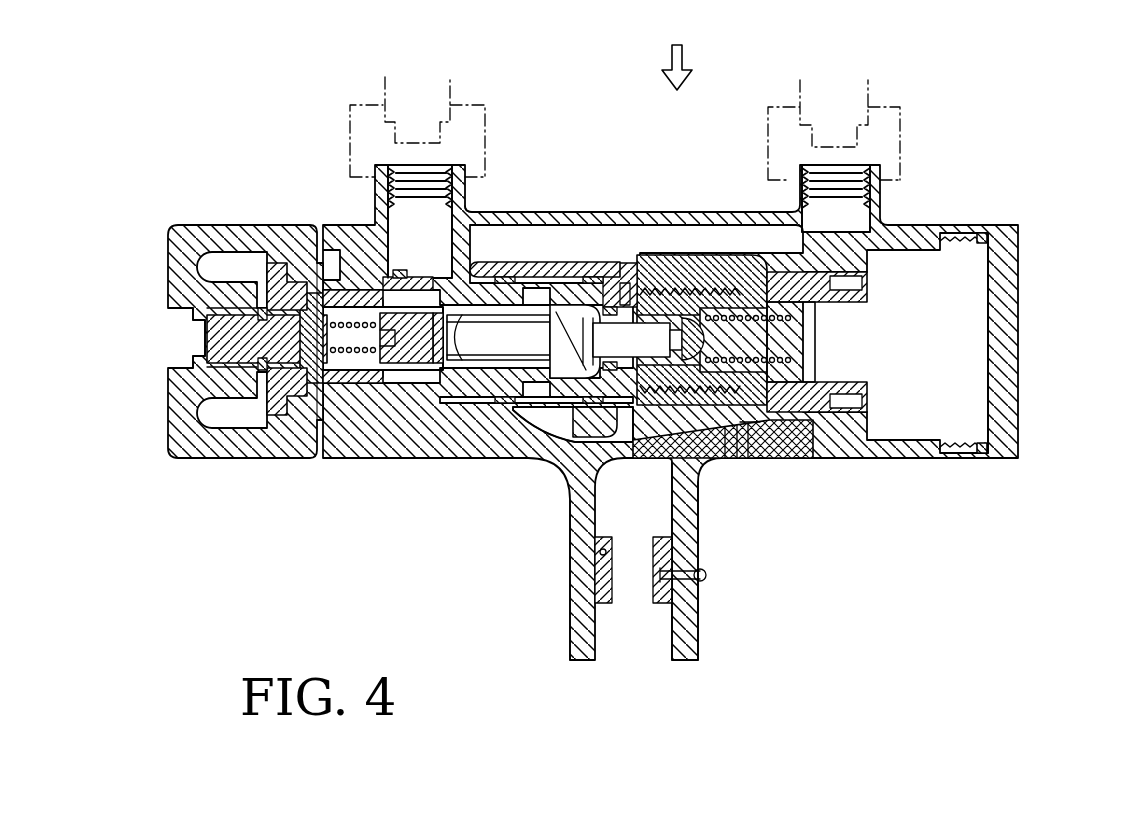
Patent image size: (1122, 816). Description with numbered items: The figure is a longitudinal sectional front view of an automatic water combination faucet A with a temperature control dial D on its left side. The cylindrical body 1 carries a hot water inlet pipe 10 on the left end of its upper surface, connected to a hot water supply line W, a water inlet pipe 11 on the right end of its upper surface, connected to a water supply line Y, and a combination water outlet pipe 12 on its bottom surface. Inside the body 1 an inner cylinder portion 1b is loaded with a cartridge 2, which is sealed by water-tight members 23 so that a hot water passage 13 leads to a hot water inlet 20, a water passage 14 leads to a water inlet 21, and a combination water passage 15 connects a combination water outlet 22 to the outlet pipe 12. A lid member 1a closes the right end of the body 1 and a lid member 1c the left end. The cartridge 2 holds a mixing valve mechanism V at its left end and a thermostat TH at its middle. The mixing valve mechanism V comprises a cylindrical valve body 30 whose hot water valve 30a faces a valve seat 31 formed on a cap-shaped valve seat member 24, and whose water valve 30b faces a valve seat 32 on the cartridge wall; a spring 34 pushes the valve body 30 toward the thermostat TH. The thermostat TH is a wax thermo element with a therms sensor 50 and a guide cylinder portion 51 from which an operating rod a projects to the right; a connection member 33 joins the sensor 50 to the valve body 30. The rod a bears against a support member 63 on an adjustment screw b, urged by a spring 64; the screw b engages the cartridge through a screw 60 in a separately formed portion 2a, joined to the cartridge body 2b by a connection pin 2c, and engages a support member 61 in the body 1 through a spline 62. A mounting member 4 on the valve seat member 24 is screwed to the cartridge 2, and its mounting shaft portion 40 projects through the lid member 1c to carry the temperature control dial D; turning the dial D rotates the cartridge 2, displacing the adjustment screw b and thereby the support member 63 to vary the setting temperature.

The body 1 is at (668, 401).
The lid member 1a is at (1020, 368).
The inner cylinder portion 1b is at (660, 227).
The lid member 1c is at (285, 300).
The cartridge 2 is at (759, 536).
The portion 2a is at (748, 460).
The cartridge body 2b is at (725, 460).
The connection pin 2c is at (737, 460).
The mounting member 4 is at (265, 462).
The hot water inlet pipe 10 is at (458, 210).
The water inlet pipe 11 is at (878, 222).
The combination water outlet pipe 12 is at (700, 545).
The hot water passage 13 is at (380, 228).
The water passage 14 is at (574, 226).
The combination water passage 15 is at (552, 472).
The hot water inlet 20 is at (335, 295).
The water inlet 21 is at (470, 262).
The combination water outlet 22 is at (617, 462).
The water-tight members 23 is at (400, 270).
The valve seat member 24 is at (330, 318).
The valve body 30 is at (385, 449).
The hot water valve 30a is at (326, 462).
The water valve 30b is at (450, 462).
The valve seat 31 is at (313, 462).
The valve seat 32 is at (400, 462).
The connection member 33 is at (285, 462).
The spring 34 is at (235, 462).
The mounting shaft portion 40 is at (205, 316).
The therms sensor 50 is at (517, 462).
The guide cylinder portion 51 is at (750, 460).
The screw 60 is at (727, 258).
The support member 61 is at (860, 290).
The spline 62 is at (830, 305).
The support member 63 is at (690, 340).
The spring 64 is at (805, 368).
The automatic water combination faucet A is at (677, 51).
The temperature control dial D is at (195, 462).
The thermostat TH is at (484, 462).
The mixing valve mechanism V is at (378, 462).
The hot water supply line W is at (383, 82).
The water supply line Y is at (868, 92).
The operating rod a is at (760, 460).
The adjustment screw b is at (800, 460).